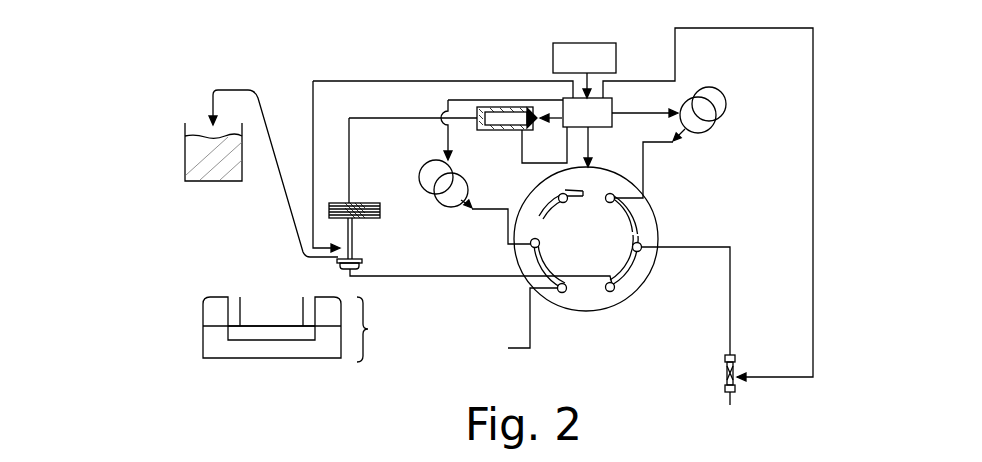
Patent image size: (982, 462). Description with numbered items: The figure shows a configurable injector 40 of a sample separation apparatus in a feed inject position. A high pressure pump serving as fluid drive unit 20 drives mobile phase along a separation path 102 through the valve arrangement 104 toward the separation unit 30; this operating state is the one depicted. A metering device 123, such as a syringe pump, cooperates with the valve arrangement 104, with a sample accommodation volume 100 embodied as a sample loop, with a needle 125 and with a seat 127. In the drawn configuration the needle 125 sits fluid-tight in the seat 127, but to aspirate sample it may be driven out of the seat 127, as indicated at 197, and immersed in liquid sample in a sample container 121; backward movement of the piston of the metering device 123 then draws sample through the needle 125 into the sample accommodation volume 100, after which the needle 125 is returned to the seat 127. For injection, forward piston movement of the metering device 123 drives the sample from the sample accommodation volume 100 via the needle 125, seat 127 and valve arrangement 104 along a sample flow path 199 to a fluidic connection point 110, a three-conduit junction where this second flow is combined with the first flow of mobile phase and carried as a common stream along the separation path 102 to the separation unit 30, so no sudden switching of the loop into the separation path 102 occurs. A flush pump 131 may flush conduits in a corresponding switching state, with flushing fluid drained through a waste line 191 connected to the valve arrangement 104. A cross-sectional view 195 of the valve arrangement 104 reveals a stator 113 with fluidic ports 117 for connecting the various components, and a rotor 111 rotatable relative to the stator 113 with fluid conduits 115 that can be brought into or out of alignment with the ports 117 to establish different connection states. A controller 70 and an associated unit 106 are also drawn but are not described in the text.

The fluid drive unit 20 is at (724, 94).
The separation unit 30 is at (722, 368).
The configurable injector 40 is at (636, 50).
The controller 70 is at (559, 132).
The sample accommodation volume 100 is at (350, 203).
The separation path 102 is at (645, 165).
The valve arrangement 104 is at (690, 199).
The control unit 106 is at (584, 70).
The fluidic connection point 110 is at (636, 247).
The rotor 111 is at (208, 347).
The stator 113 is at (210, 307).
The fluid conduits 115 is at (565, 191).
The fluidic ports 117 is at (310, 312).
The sample container 121 is at (184, 140).
The metering device 123 is at (507, 130).
The needle 125 is at (354, 228).
The seat 127 is at (362, 264).
The flush pump 131 is at (372, 190).
The waste line 191 is at (515, 344).
The cross-sectional view 195 is at (205, 275).
The needle drive-out movement 197 is at (254, 93).
The sample flow path 199 is at (618, 277).